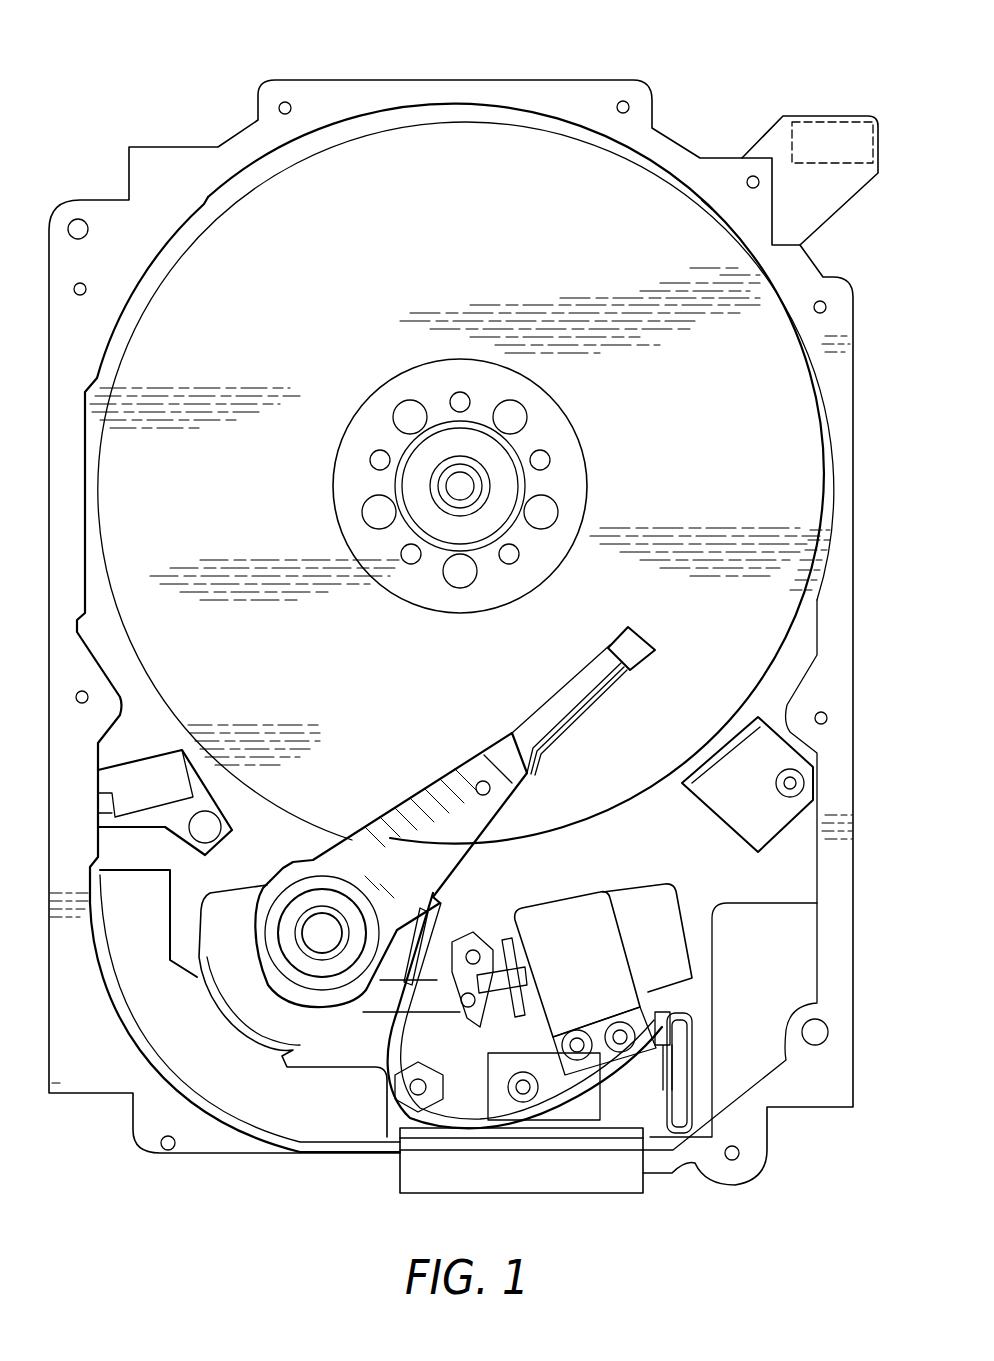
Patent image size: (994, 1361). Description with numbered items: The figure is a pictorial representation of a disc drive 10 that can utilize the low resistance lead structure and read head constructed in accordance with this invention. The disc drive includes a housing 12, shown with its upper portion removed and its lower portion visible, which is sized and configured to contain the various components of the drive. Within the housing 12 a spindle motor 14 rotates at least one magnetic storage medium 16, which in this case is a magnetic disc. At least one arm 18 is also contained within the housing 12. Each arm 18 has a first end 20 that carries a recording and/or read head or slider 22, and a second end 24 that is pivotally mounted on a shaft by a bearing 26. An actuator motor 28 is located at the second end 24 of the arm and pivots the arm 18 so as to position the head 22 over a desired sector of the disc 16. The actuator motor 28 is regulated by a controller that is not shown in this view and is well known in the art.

The disc drive 10 is at (108, 132).
The housing 12 is at (603, 92).
The spindle motor 14 is at (453, 492).
The magnetic storage medium 16 is at (365, 268).
The arm 18 is at (445, 803).
The first end 20 is at (570, 680).
The head 22 is at (628, 645).
The second end 24 is at (347, 867).
The bearing 26 is at (308, 912).
The actuator motor 28 is at (205, 1061).